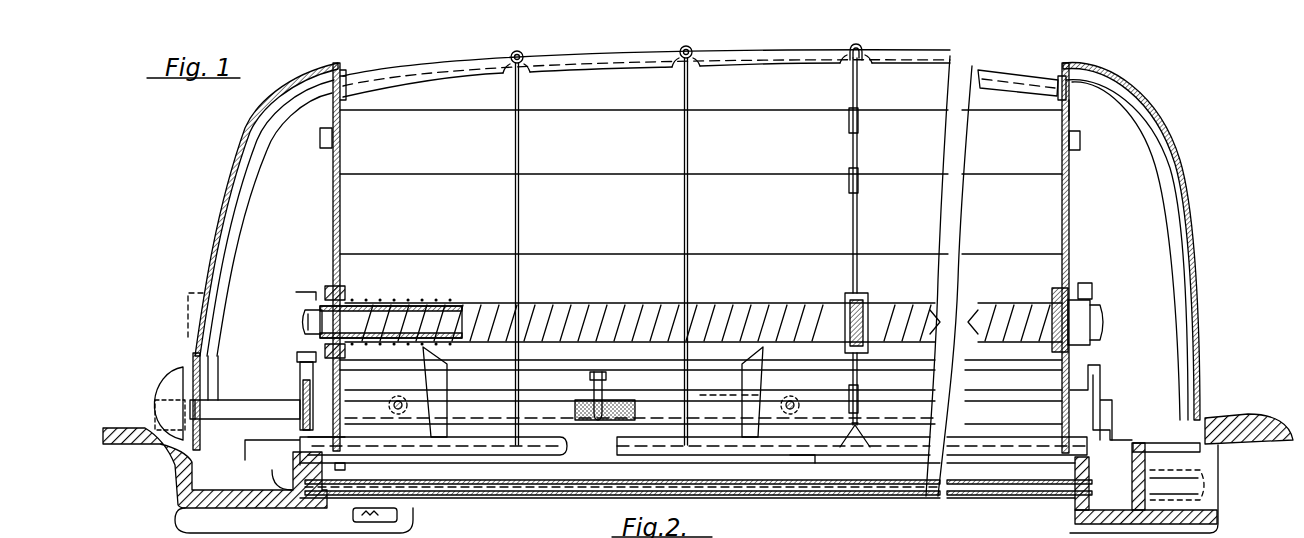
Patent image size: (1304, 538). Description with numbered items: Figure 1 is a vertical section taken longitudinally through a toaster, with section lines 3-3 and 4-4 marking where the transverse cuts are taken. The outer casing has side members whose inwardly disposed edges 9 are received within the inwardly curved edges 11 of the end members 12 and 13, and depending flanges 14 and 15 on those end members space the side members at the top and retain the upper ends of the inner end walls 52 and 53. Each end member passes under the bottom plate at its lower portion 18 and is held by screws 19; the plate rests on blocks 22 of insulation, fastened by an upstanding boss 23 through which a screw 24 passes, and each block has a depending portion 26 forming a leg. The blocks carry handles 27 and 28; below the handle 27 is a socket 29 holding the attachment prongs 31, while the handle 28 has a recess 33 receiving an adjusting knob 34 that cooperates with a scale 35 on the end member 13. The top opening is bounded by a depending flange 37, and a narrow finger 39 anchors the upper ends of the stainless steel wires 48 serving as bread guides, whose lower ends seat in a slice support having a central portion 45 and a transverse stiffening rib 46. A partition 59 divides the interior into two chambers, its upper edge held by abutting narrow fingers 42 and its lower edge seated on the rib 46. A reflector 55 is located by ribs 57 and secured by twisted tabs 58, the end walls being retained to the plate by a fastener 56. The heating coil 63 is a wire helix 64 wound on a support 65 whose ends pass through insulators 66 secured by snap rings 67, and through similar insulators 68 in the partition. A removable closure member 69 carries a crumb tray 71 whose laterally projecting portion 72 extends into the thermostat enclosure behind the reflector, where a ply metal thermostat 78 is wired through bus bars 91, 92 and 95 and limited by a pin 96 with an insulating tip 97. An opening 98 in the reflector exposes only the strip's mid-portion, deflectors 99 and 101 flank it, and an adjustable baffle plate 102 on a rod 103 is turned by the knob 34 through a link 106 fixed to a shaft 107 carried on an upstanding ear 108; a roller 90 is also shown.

The section line 3- 3 is at (600, 43).
The section line 4- 4 is at (318, 48).
The inwardly disposed edge 9 is at (250, 178).
The inwardly curved edge 11 is at (262, 126).
The end member 12 is at (1180, 195).
The end member 13 is at (226, 200).
The depending flange 14 is at (1058, 78).
The depending flange 15 is at (348, 74).
The end member lower portion 18 is at (190, 474).
The screws 19 is at (200, 490).
The block 22 is at (180, 525).
The upstanding boss 23 is at (272, 506).
The screw 24 is at (258, 438).
The depending portion 26 is at (400, 520).
The handle 27 is at (1256, 418).
The handle 28 is at (120, 420).
The socket 29 is at (1206, 508).
The attachment prongs 31 is at (1212, 486).
The recess 33 is at (168, 458).
The adjusting knob 34 is at (162, 395).
The scale 35 is at (188, 350).
The depending flange 37 is at (742, 66).
The narrow finger 39 is at (522, 54).
The narrow finger 42 is at (866, 50).
The central portion 45 is at (982, 440).
The transverse stiffening rib 46 is at (856, 438).
The stainless steel wires 48 is at (519, 230).
The end wall 52 is at (1071, 201).
The end wall 53 is at (330, 200).
The reflector 55 is at (701, 287).
The fastener 56 is at (339, 470).
The ribs 57 is at (1072, 119).
The tabs 58 is at (322, 138).
The partition 59 is at (861, 228).
The heating coil 63 is at (592, 295).
The wire helix 64 is at (736, 297).
The support 65 is at (658, 322).
The insulators 66 is at (345, 298).
The snap rings 67 is at (320, 282).
The insulators 68 is at (866, 298).
The closure member 69 is at (773, 492).
The crumb tray 71 is at (722, 470).
The laterally projecting portion 72 is at (800, 450).
The ply metal thermostat 78 is at (626, 406).
The roller 90 is at (445, 380).
The bus bar 91 is at (1094, 370).
The bus bar 92 is at (306, 302).
The bus bar 95 is at (1115, 437).
The pin 96 is at (592, 381).
The insulating tip 97 is at (604, 405).
The opening 98 is at (720, 383).
The deflector 99 is at (760, 377).
The deflector 101 is at (428, 371).
The adjustable baffle plate 102 is at (470, 414).
The rod 103 is at (353, 418).
The link 106 is at (302, 358).
The shaft 107 is at (234, 403).
The upstanding ear 108 is at (300, 400).